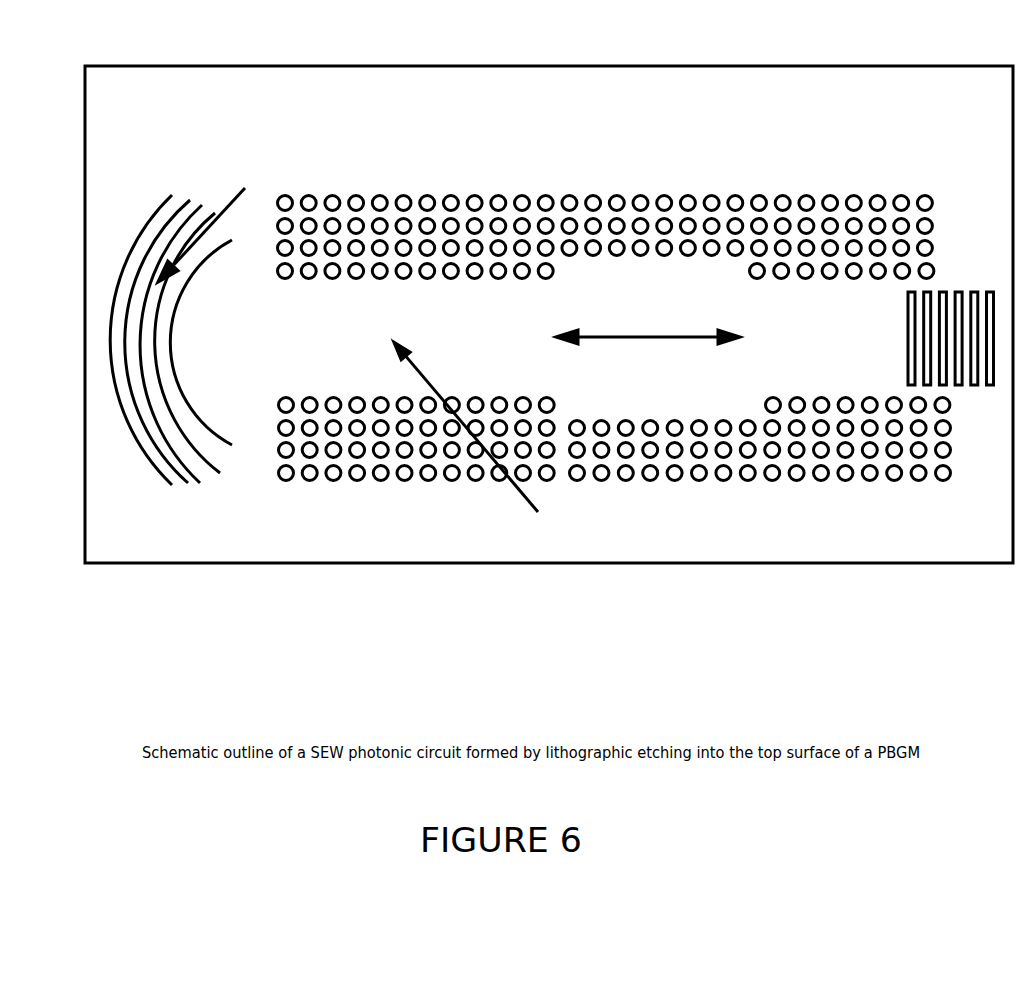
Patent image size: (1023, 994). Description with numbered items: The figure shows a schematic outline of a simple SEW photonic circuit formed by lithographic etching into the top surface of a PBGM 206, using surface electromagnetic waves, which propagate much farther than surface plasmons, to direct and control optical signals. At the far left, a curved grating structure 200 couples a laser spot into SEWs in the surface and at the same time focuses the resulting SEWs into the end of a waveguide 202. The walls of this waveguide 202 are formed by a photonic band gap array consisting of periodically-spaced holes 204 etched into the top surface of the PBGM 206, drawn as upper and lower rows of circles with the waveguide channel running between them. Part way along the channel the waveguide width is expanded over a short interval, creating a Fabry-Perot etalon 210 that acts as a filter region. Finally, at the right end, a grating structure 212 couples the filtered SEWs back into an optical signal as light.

The curved grating structure 200 is at (256, 286).
The waveguide 202 is at (823, 352).
The periodically-spaced holes 204 is at (453, 501).
The top surface of the PBGM 206 is at (259, 534).
The Fabry-Perot etalon 210 is at (662, 317).
The grating structure 212 is at (953, 593).